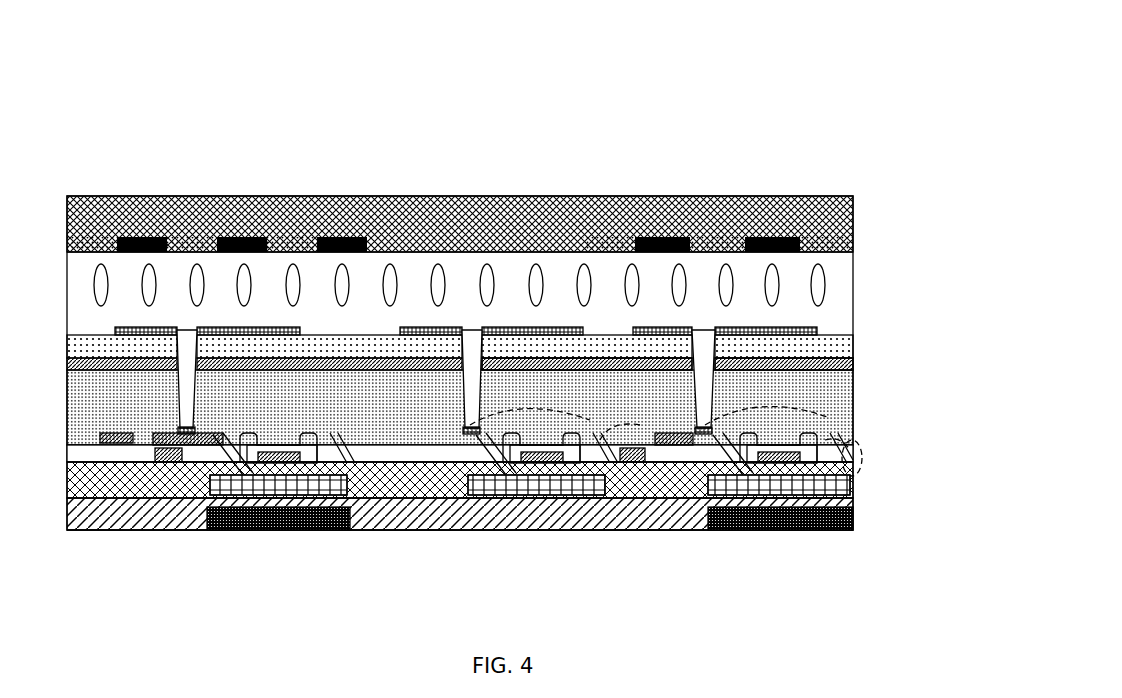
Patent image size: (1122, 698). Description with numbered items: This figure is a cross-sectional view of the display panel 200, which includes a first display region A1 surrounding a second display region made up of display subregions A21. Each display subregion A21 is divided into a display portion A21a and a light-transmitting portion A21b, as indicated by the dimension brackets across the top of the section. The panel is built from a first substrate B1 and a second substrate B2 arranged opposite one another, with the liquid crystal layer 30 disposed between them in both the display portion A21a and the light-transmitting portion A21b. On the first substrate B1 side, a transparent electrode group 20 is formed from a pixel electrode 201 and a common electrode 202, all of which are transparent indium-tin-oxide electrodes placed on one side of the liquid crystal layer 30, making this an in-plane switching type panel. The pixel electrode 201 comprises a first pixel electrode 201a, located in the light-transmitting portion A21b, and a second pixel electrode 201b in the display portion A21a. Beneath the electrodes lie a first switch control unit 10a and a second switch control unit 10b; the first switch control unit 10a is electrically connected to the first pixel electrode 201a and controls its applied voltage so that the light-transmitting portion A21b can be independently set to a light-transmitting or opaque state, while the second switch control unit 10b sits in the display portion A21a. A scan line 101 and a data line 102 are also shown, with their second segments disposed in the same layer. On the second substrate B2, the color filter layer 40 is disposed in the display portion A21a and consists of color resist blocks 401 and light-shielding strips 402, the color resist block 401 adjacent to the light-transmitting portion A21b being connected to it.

The display panel 200 is at (778, 48).
The first display region A1 is at (375, 110).
The display subregion A21 is at (680, 54).
The display portion A21a is at (853, 110).
The light-transmitting portion A21b is at (378, 98).
The second substrate B2 is at (853, 210).
The first substrate B1 is at (868, 388).
The liquid crystal layer 30 is at (853, 285).
The transparent electrode group 20 is at (605, 142).
The pixel electrode 201 is at (640, 172).
The common electrode 202 is at (506, 328).
The first pixel electrode 201a is at (565, 330).
The second pixel electrode 201b is at (648, 330).
The color filter layer 40 is at (812, 150).
The color resist block 401 is at (766, 196).
The light-shielding strip 402 is at (816, 196).
The first switch control unit 10a is at (525, 535).
The second switch control unit 10b is at (762, 535).
The scan line 101 is at (177, 460).
The data line 102 is at (117, 447).